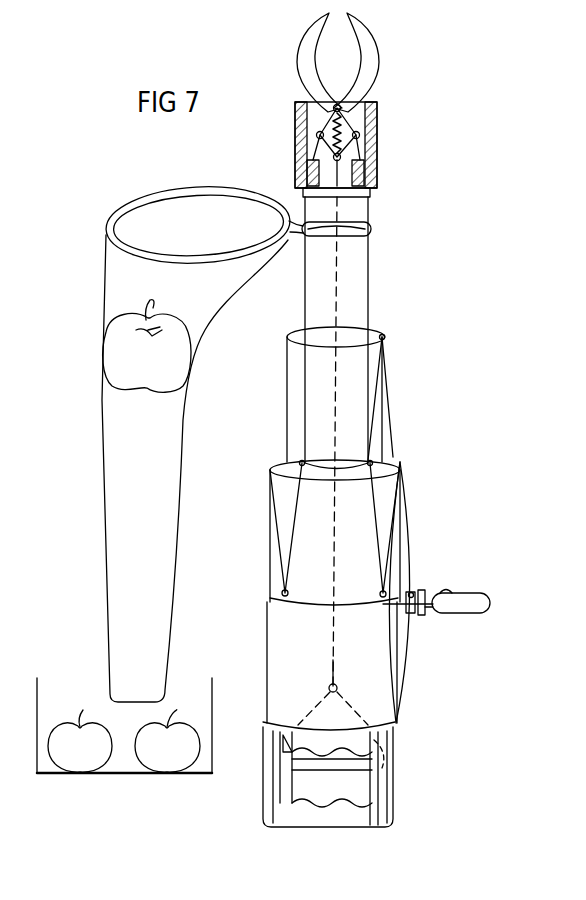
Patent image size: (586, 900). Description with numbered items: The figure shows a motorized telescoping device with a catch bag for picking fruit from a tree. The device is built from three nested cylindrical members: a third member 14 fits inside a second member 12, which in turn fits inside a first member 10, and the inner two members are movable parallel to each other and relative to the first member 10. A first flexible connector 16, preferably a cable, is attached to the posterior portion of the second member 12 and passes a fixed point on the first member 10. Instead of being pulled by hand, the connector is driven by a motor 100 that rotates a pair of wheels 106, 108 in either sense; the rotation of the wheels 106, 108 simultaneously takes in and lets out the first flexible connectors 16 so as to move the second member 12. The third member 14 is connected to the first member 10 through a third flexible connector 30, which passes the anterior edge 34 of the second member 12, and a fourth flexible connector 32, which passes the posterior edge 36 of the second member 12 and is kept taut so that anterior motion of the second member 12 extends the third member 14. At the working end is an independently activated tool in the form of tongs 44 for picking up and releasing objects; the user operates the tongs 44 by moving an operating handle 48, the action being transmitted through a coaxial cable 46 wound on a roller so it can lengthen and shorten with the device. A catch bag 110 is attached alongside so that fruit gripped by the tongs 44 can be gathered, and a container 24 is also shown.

The first member 10 is at (293, 630).
The second member 12 is at (290, 372).
The third member 14 is at (362, 258).
The first flexible connector 16 is at (390, 508).
The collection container 24 is at (393, 727).
The third flexible connector 30 is at (377, 388).
The fourth flexible connector 32 is at (285, 522).
The anterior edge of second member 34 is at (382, 337).
The posterior edge of second member 36 is at (282, 598).
The tongs 44 is at (377, 47).
The coaxial cable 46 is at (323, 662).
The operating handle 48 is at (345, 815).
The motor 100 is at (490, 605).
The wheel 106 is at (432, 592).
The wheel 108 is at (416, 592).
The catch bag 110 is at (103, 434).